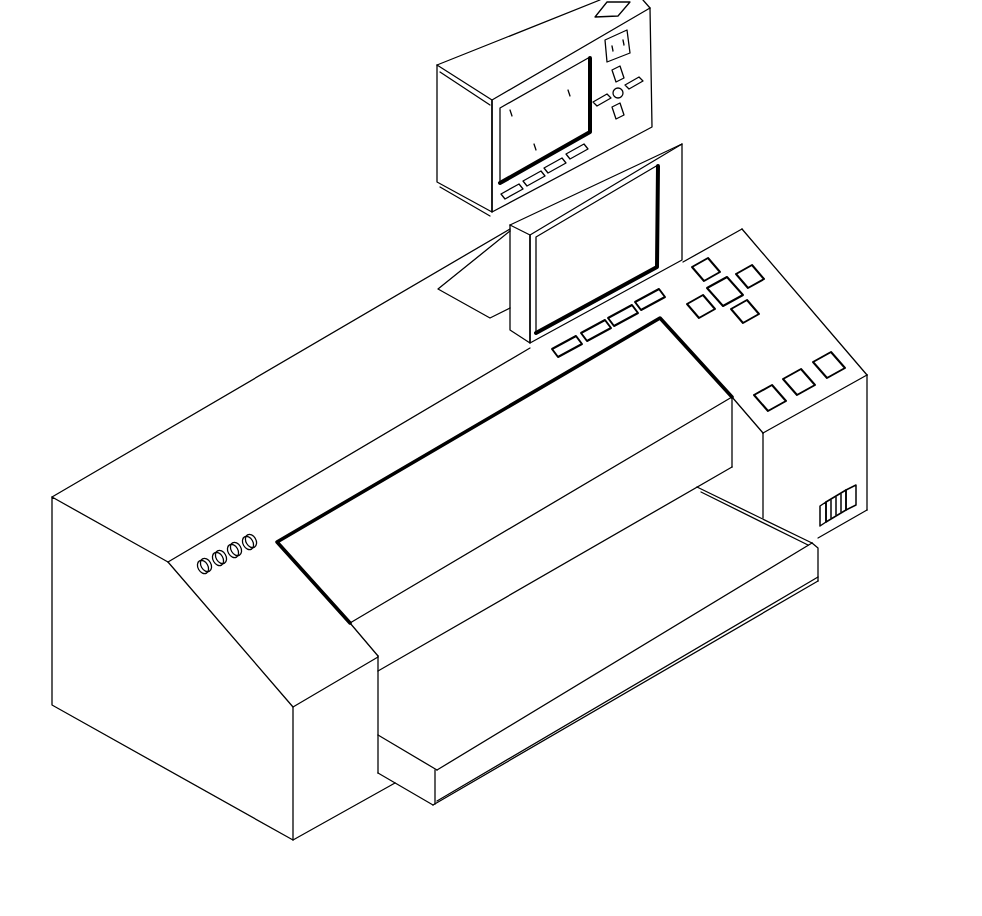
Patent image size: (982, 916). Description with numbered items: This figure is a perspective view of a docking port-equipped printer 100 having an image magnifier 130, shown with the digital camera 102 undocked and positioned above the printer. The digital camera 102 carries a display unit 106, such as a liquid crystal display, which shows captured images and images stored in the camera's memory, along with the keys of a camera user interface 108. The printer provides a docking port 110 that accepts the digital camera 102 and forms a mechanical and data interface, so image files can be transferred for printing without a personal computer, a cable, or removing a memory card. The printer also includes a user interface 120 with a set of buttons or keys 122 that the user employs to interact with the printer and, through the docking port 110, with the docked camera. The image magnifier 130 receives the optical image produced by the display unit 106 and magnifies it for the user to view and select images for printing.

The docking port-equipped printer 100 is at (170, 244).
The digital camera 102 is at (490, 44).
The display unit 106 is at (502, 162).
The user interface of the digital camera 108 is at (648, 124).
The docking port 110 is at (441, 270).
The user interface 120 is at (754, 232).
The buttons or keys 122 is at (650, 298).
The image magnifier 130 is at (647, 213).